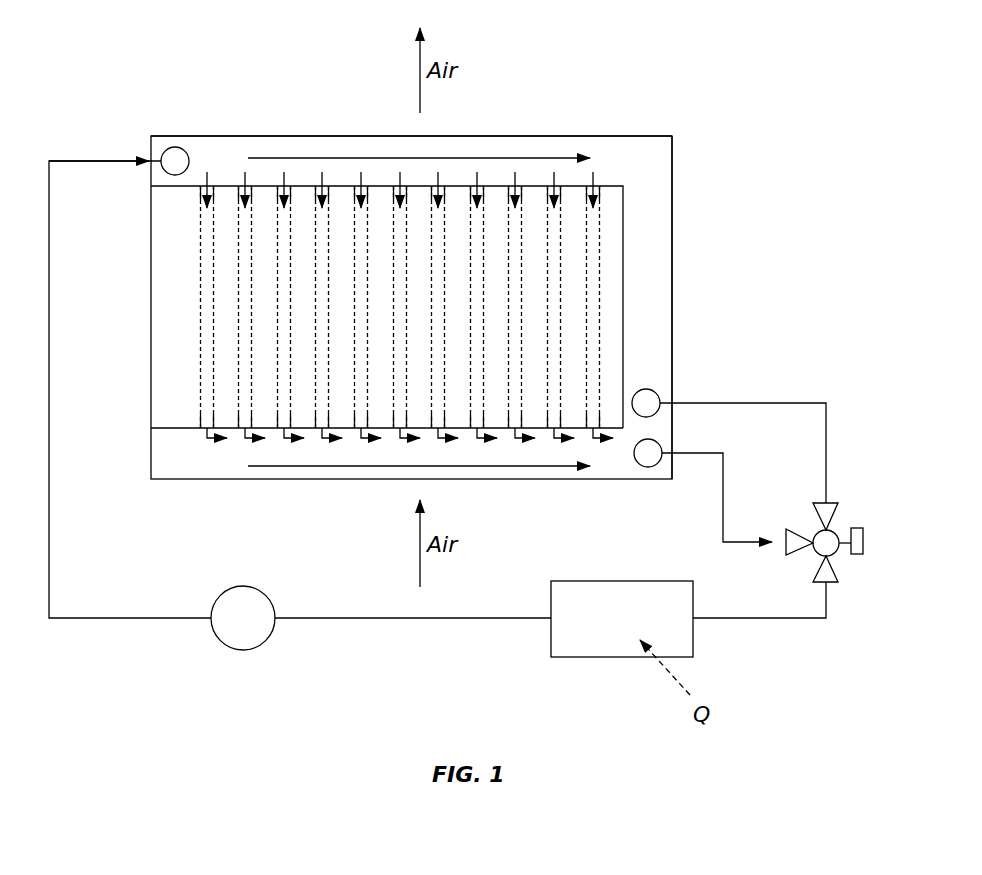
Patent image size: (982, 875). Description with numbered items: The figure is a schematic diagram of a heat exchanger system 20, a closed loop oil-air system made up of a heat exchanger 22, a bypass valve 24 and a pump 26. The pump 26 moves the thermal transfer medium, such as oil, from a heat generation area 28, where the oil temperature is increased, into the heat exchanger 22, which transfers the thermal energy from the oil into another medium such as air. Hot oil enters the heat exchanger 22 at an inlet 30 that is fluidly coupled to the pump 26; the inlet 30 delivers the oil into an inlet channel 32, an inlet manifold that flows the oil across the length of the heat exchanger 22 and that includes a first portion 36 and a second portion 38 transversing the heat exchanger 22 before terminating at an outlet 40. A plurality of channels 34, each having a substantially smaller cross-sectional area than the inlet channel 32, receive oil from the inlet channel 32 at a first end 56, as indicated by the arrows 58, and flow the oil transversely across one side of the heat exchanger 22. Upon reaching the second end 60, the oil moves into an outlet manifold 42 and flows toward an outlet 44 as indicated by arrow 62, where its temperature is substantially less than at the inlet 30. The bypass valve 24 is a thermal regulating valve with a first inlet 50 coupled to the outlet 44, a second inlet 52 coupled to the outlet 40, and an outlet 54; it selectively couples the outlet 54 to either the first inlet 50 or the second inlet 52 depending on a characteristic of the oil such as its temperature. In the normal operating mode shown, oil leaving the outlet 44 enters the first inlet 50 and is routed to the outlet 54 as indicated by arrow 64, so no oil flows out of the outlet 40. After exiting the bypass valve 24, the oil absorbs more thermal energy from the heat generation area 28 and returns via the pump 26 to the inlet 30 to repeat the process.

The heat exchanger system 20 is at (128, 46).
The heat exchanger 22 is at (151, 325).
The bypass valve 24 is at (872, 543).
The pump 26 is at (243, 650).
The heat generation area 28 is at (593, 657).
The inlet 30 is at (170, 145).
The inlet channel 32 is at (470, 136).
The plurality of channels 34 is at (190, 243).
The first portion 36 is at (630, 150).
The second portion 38 is at (666, 252).
The outlet 40 is at (650, 390).
The outlet manifold 42 is at (213, 475).
The outlet 44 is at (648, 468).
The first inlet 50 is at (786, 548).
The second inlet 52 is at (812, 512).
The outlet 54 is at (835, 565).
The first end 56 is at (200, 197).
The arrows 58 is at (207, 186).
The second end 60 is at (200, 420).
The arrow 62 is at (313, 466).
The arrow 64 is at (818, 555).